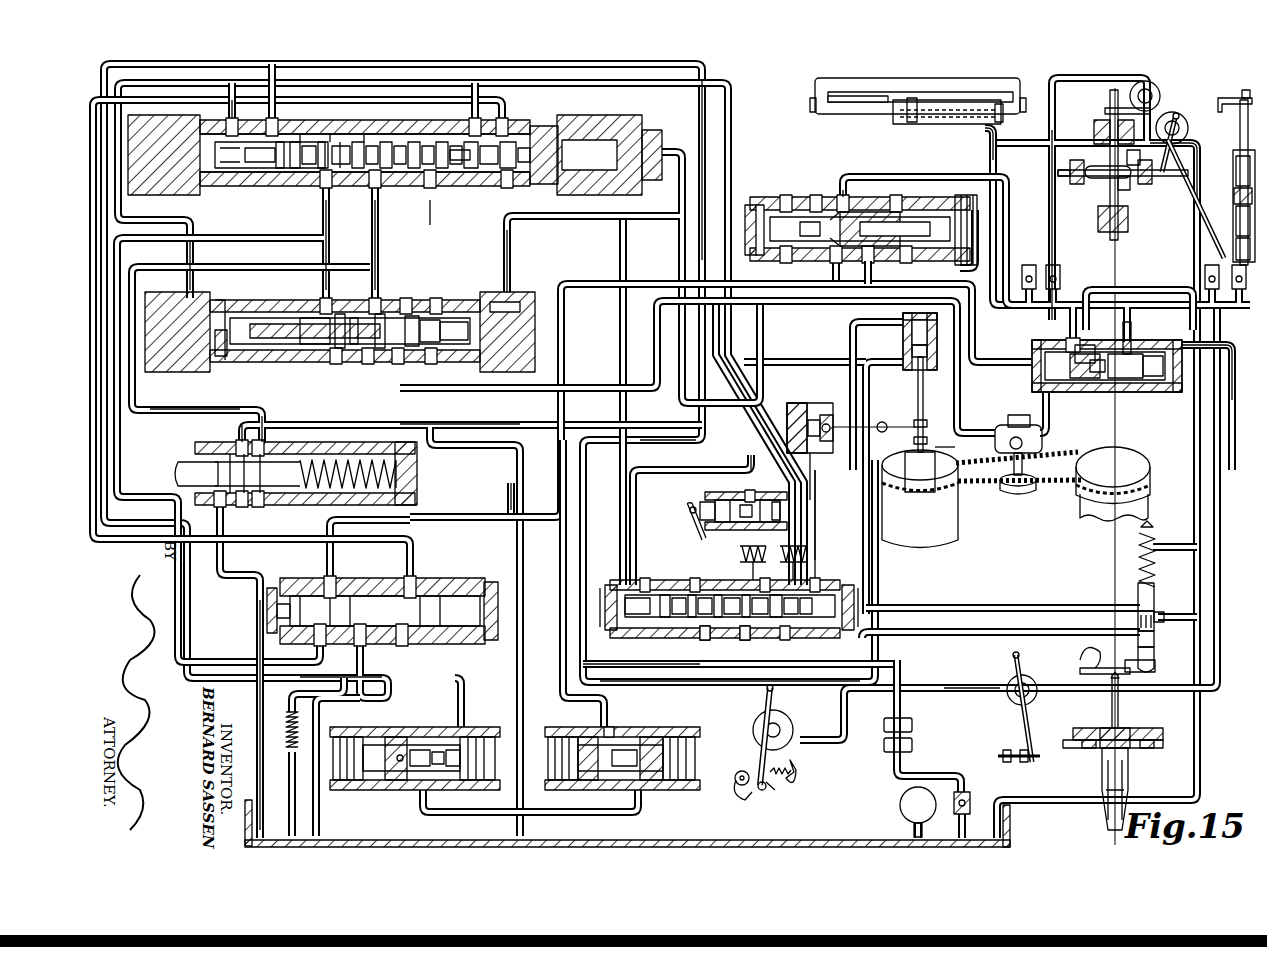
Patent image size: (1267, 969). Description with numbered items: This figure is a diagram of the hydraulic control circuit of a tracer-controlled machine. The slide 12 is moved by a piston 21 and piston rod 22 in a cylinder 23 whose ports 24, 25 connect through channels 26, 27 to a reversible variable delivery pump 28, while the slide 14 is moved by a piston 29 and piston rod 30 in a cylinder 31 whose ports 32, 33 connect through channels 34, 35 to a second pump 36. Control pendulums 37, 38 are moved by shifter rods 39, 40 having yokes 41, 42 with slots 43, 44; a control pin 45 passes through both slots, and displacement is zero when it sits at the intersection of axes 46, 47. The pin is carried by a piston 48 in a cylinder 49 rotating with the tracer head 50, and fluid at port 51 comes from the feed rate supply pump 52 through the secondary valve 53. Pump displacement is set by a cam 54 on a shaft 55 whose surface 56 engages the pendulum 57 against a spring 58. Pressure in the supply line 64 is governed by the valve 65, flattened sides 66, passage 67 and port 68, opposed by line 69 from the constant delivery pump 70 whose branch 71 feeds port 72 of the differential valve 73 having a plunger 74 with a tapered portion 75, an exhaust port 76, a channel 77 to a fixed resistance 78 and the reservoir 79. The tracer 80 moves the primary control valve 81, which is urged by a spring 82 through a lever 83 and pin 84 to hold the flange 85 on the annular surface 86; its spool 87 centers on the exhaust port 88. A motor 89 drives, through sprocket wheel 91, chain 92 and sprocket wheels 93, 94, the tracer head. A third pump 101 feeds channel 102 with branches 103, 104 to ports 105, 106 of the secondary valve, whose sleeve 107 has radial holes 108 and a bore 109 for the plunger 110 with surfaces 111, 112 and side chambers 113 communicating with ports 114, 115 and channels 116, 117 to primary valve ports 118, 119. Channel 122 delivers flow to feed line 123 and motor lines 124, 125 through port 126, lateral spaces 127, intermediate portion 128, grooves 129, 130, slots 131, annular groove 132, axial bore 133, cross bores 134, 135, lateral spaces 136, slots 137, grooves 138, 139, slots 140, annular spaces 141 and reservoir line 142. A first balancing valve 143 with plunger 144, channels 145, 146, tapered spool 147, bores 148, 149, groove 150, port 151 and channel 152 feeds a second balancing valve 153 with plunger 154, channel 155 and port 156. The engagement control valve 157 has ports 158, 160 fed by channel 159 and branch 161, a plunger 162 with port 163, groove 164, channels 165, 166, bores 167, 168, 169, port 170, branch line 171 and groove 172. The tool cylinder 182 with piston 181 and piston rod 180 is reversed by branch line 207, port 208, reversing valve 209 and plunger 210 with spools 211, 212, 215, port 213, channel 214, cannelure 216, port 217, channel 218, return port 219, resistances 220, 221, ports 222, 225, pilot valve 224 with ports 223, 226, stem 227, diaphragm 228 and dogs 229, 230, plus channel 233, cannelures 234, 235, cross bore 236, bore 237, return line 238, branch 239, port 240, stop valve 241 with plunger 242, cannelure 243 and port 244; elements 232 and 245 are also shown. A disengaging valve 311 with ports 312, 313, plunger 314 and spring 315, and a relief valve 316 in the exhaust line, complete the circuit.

The slide 12 is at (958, 92).
The slide 14 is at (1232, 97).
The piston 21 is at (912, 97).
The piston rod 22 is at (840, 112).
The cylinder 23 is at (926, 126).
The port 24 is at (896, 120).
The port 25 is at (992, 124).
The channel 26 is at (1055, 140).
The channel 27 is at (1022, 130).
The reversible variable delivery pump 28 is at (1148, 88).
The piston 29 is at (1234, 194).
The piston rod 30 is at (1240, 126).
The cylinder 31 is at (1236, 216).
The port 32 is at (1236, 245).
The port 33 is at (1236, 164).
The channel 34 is at (1196, 228).
The channel 35 is at (1195, 141).
The reversible variable delivery pump 36 is at (1176, 114).
The control pendulum 37 is at (1114, 108).
The control pendulum 38 is at (1180, 140).
The shifter rod 39 is at (1100, 122).
The shifter rod 40 is at (1146, 184).
The yoke 41 is at (1096, 180).
The yoke 42 is at (1128, 212).
The slot 43 is at (1086, 158).
The slot 44 is at (1124, 190).
The control pin 45 is at (1131, 338).
The axis 46 is at (1116, 280).
The axis 47 is at (1062, 178).
The piston 48 is at (1150, 385).
The cylinder 49 is at (1132, 385).
The tracer head 50 is at (1148, 500).
The port 51 is at (1032, 368).
The feed rate supply pump 52 is at (787, 722).
The secondary valve 53 is at (470, 140).
The cam 54 is at (736, 800).
The rotatable shaft 55 is at (738, 776).
The contoured surface 56 is at (762, 792).
The pendulum 57 is at (772, 790).
The spring 58 is at (794, 764).
The supply line 64 is at (608, 386).
The valve 65 is at (1066, 342).
The flattened sides 66 is at (1094, 385).
The internal passage 67 is at (1072, 385).
The port 68 is at (1080, 345).
The fluid supply line 69 is at (1205, 342).
The constant delivery pump 70 is at (1006, 686).
The branch 71 is at (843, 183).
The port 72 is at (838, 196).
The differential valve 73 is at (756, 205).
The plunger 74 is at (868, 262).
The tapered portion 75 is at (850, 214).
The exhaust port 76 is at (834, 262).
The channel 77 is at (587, 275).
The resistance 78 is at (285, 714).
The reservoir 79 is at (256, 800).
The tracer 80 is at (1128, 770).
The primary control valve 81 is at (1154, 658).
The spring 82 is at (1139, 558).
The pivotal lever 83 is at (1128, 676).
The intermediate pin 84 is at (1119, 700).
The flange 85 is at (1090, 728).
The raised annular surface 86 is at (1084, 748).
The spool 87 is at (1138, 620).
The exhaust port 88 is at (1160, 611).
The fluid operable motor 89 is at (1040, 443).
The sprocket wheel 91 is at (962, 466).
The chain 92 is at (978, 492).
The sprocket wheel 93 is at (1118, 455).
The sprocket wheel 94 is at (940, 450).
The third pump 101 is at (900, 798).
The channel 102 is at (700, 111).
The branch 103 is at (844, 722).
The branch 104 is at (945, 686).
The port 105 is at (488, 120).
The port 106 is at (266, 130).
The valve sleeve 107 is at (524, 170).
The radial holes 108 is at (265, 190).
The bore 109 is at (240, 185).
The valve plunger 110 is at (558, 122).
The reduced arcuate surface 111 is at (488, 144).
The reduced arcuate surface 112 is at (284, 175).
The side chambers 113 is at (506, 170).
The port 114 is at (512, 188).
The port 115 is at (228, 121).
The channel 116 is at (630, 216).
The channel 117 is at (280, 82).
The port 118 is at (1138, 594).
The port 119 is at (1138, 645).
The channel 122 is at (462, 235).
The feed line 123 is at (420, 232).
The motor supply line 124 is at (323, 252).
The motor supply line 125 is at (372, 249).
The port 126 is at (442, 140).
The lateral spaces 127 is at (402, 145).
The intermediate portion 128 is at (428, 144).
The arcuate groove 129 is at (390, 175).
The arcuate groove 130 is at (362, 175).
The elongated slots 131 is at (372, 168).
The annular groove 132 is at (412, 141).
The axial bore 133 is at (332, 138).
The cross bore 134 is at (456, 144).
The cross bore 135 is at (303, 134).
The lateral spaces 136 is at (296, 172).
The elongated slots 137 is at (326, 172).
The annular grooves 138 is at (312, 168).
The annular groove 139 is at (366, 140).
The elongated slots 140 is at (345, 145).
The annular spaces 141 is at (342, 140).
The reservoir line 142 is at (350, 106).
The first balancing valve 143 is at (424, 728).
The plunger 144 is at (372, 790).
The channel 145 is at (462, 690).
The channel 146 is at (392, 680).
The tapered spool 147 is at (402, 735).
The radial bore 148 is at (396, 790).
The axial bore 149 is at (420, 790).
The annular groove 150 is at (452, 790).
The port 151 is at (438, 790).
The channel 152 is at (488, 815).
The second balancing valve 153 is at (622, 728).
The plunger 154 is at (636, 790).
The channel 155 is at (560, 681).
The port 156 is at (614, 728).
The automatic engagement control valve 157 is at (258, 362).
The port 158 is at (206, 300).
The channel 159 is at (188, 258).
The port 160 is at (506, 296).
The branch 161 is at (506, 270).
The valve plunger 162 is at (290, 360).
The port 163 is at (320, 300).
The annular groove 164 is at (342, 312).
The channel 165 is at (266, 410).
The channel 166 is at (350, 386).
The cross bore 167 is at (352, 348).
The axial bore 168 is at (412, 312).
The cross bore 169 is at (420, 346).
The port 170 is at (448, 346).
The branch line 171 is at (488, 399).
The annular groove 172 is at (383, 312).
The piston rod 180 is at (923, 400).
The piston 181 is at (912, 350).
The cylinder 182 is at (903, 333).
The branch line 207 is at (744, 641).
The port 208 is at (706, 640).
The reversing valve 209 is at (654, 580).
The plunger 210 is at (636, 617).
The spool 211 is at (704, 596).
The spool 212 is at (746, 594).
The port 213 is at (716, 618).
The channel 214 is at (793, 686).
The spool 215 is at (780, 594).
The cannelure 216 is at (790, 618).
The port 217 is at (804, 620).
The channel 218 is at (850, 331).
The return port 219 is at (762, 596).
The fluid resistance 220 is at (742, 548).
The fluid resistance 221 is at (782, 546).
The port 222 is at (610, 585).
The port 223 is at (812, 470).
The pilot valve 224 is at (796, 402).
The port 225 is at (844, 586).
The port 226 is at (812, 418).
The valve stem 227 is at (826, 423).
The diaphragm 228 is at (882, 421).
The adjustable dog 229 is at (923, 418).
The adjustable dog 230 is at (906, 458).
The conduit 232 is at (844, 540).
The channel 233 is at (634, 522).
The cannelure 234 is at (692, 594).
The cannelure 235 is at (668, 594).
The cross bore 236 is at (678, 617).
The longitudinal bore 237 is at (730, 596).
The cross bore 238 is at (710, 456).
The branch 239 is at (780, 470).
The port 240 is at (776, 522).
The stop valve 241 is at (712, 494).
The plunger 242 is at (700, 506).
The cannelure 243 is at (744, 518).
The port 244 is at (746, 492).
The lever 245 is at (696, 532).
The disengaging valve 311 is at (265, 507).
The port 312 is at (270, 438).
The port 313 is at (236, 436).
The valve plunger 314 is at (190, 462).
The spring 315 is at (356, 505).
The relief valve 316 is at (462, 578).